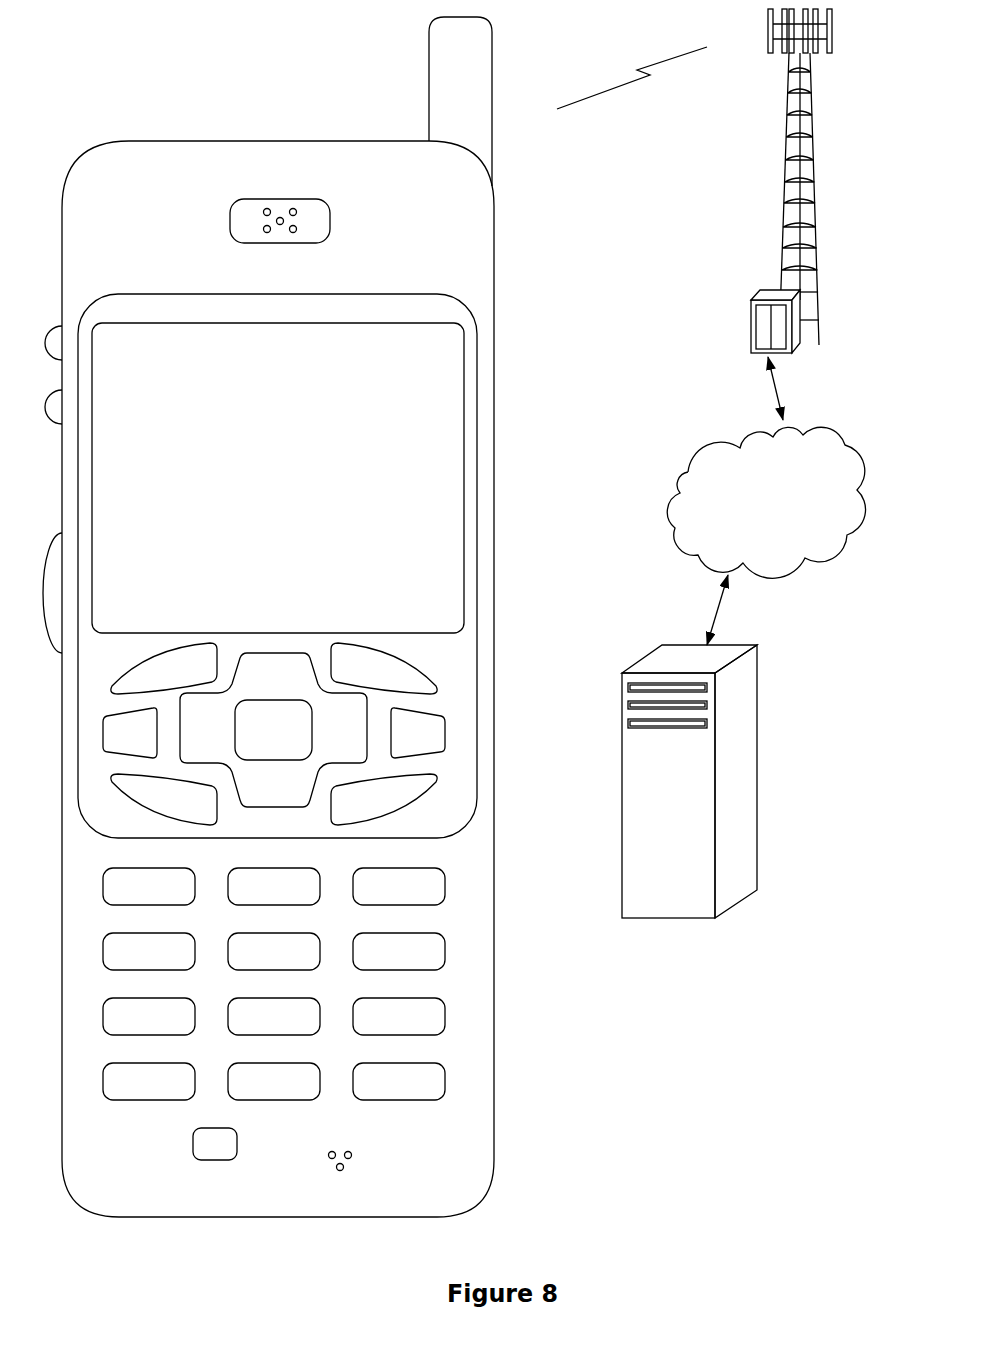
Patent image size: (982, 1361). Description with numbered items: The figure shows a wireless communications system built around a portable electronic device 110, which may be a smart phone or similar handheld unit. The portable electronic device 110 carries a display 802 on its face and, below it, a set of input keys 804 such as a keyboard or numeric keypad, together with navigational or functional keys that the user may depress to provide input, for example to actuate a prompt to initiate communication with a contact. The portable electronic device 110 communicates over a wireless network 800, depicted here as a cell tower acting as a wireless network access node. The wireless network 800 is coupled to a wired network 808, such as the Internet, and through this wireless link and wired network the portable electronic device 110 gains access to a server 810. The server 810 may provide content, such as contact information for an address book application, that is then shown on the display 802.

The portable electronic device 110 is at (288, 100).
The wireless network 800 is at (783, 197).
The display 802 is at (467, 339).
The input keys 804 is at (504, 644).
The wired network 808 is at (688, 552).
The server 810 is at (668, 918).